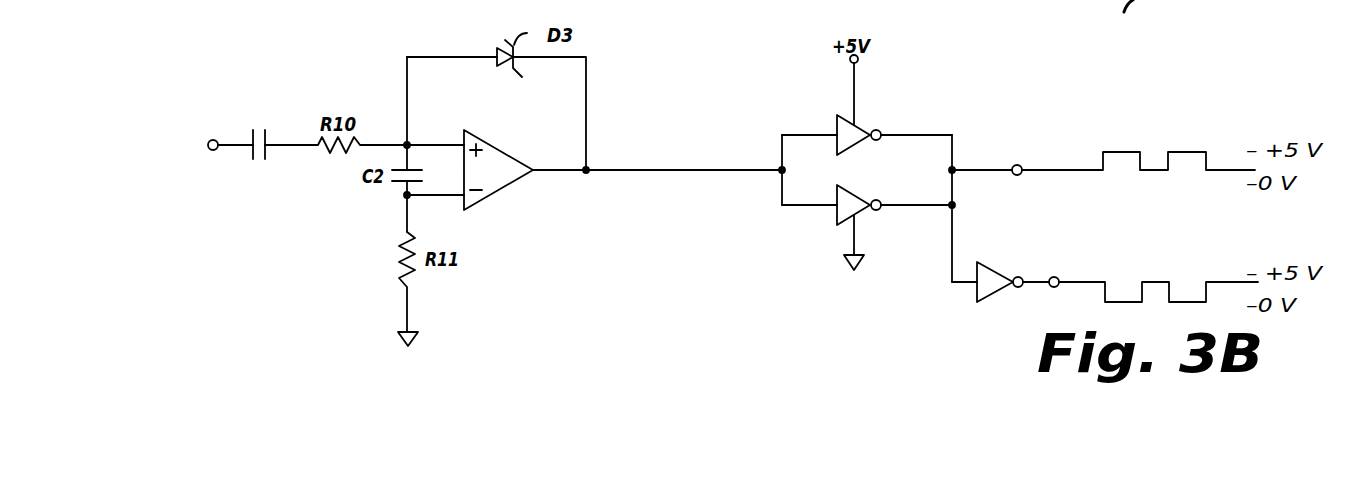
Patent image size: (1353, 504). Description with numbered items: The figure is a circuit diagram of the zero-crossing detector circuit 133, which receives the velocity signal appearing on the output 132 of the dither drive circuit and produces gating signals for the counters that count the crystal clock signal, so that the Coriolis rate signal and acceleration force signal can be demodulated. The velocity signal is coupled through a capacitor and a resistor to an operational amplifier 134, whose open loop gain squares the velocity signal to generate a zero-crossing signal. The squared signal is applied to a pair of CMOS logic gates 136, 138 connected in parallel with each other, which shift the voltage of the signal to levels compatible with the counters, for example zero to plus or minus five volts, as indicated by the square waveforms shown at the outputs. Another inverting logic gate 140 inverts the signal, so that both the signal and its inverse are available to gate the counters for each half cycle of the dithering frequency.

The output 132 is at (212, 150).
The zero-crossing detector circuit 133 is at (255, 110).
The operational amplifier 134 is at (503, 173).
The CMOS logic gate 136 is at (845, 120).
The CMOS logic gate 138 is at (843, 212).
The inverting logic gate 140 is at (990, 278).